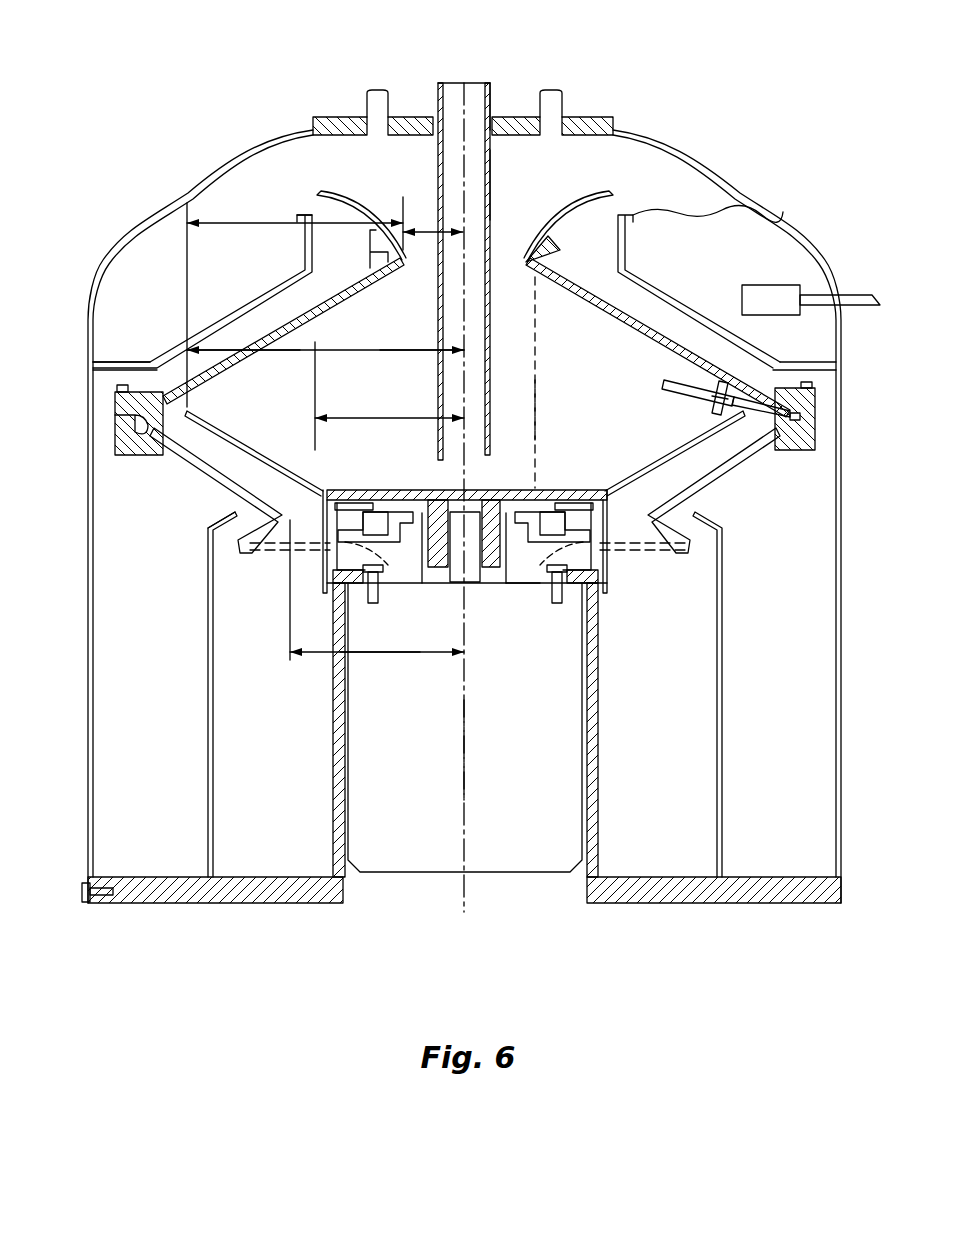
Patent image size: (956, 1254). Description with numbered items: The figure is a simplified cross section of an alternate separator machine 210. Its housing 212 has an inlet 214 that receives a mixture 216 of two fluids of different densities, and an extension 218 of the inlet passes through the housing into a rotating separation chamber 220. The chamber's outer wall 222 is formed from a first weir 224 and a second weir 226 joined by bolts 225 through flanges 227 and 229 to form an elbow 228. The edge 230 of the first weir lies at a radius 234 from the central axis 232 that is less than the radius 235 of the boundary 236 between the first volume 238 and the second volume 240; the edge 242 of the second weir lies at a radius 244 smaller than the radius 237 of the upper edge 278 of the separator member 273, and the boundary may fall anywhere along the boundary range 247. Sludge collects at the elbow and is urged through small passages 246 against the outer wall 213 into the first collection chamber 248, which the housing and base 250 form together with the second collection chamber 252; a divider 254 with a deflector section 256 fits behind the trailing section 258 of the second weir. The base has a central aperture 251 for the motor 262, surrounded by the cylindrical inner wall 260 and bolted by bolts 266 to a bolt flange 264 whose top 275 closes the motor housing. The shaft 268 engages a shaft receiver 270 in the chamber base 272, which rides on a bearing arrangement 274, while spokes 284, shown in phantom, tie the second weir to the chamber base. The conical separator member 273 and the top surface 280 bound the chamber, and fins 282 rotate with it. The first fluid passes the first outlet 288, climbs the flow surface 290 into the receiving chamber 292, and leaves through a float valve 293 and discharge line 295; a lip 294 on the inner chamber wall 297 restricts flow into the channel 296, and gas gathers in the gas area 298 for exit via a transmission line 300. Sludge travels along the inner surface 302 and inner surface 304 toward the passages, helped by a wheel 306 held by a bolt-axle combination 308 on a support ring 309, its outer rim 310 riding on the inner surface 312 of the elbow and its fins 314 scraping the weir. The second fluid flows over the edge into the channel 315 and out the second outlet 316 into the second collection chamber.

The separator machine 210 is at (278, 1035).
The housing 212 is at (745, 178).
The outer wall / bolt 213 is at (82, 903).
The inlet 214 is at (490, 92).
The mixture 216 is at (448, 83).
The extension 218 is at (492, 180).
The separation chamber 220 is at (281, 333).
The outer wall 222 is at (172, 355).
The first weir 224 is at (307, 270).
The bolts 225 is at (110, 362).
The second weir 226 is at (217, 488).
The flange 227 is at (817, 403).
The elbow 228 is at (115, 395).
The flange 229 is at (817, 440).
The edge 230 is at (378, 268).
The central axis 232 is at (470, 740).
The radius 234 is at (432, 230).
The radius 235 is at (393, 417).
The boundary 236 is at (333, 351).
The radius 237 is at (398, 349).
The first volume 238 is at (355, 445).
The second volume 240 is at (285, 378).
The edge 242 is at (258, 556).
The radius 244 is at (377, 657).
The passages 246 is at (403, 105).
The boundary range 247 is at (270, 221).
The first collection chamber 248 is at (145, 745).
The base 250 is at (250, 905).
The central aperture 251 is at (513, 890).
The second collection chamber 252 is at (270, 740).
The divider 254 is at (207, 672).
The deflector section 256 is at (215, 516).
The trailing section 258 is at (208, 560).
The inner wall 260 is at (332, 835).
The motor 262 is at (405, 815).
The bolt flange 264 is at (372, 603).
The bolts 266 is at (557, 604).
The shaft 268 is at (455, 583).
The shaft receiver 270 is at (515, 497).
The chamber base 272 is at (578, 495).
The separator member 273 is at (272, 462).
The bushing or bearing arrangement 274 is at (378, 522).
The top 275 is at (522, 585).
The upper edge 278 is at (190, 412).
The top surface 280 is at (497, 497).
The fins 282 is at (537, 388).
The spoke 284 is at (653, 590).
The first outlet 288 is at (514, 266).
The flow surface 290 is at (346, 197).
The first fluid receiving chamber 292 is at (426, 255).
The float valve 293 is at (775, 285).
The lip 294 is at (300, 213).
The discharge line 295 is at (862, 293).
The channel 296 is at (632, 300).
The inner chamber wall 297 is at (222, 352).
The gas area 298 is at (708, 195).
The transmission line 300 is at (562, 100).
The inner surface 302 is at (300, 313).
The inner surface 304 is at (222, 430).
The wheel 306 is at (664, 390).
The bolt-axle combination 308 is at (748, 383).
The support ring 309 is at (709, 403).
The outer rim 310 is at (772, 452).
The inner surface 312 is at (115, 442).
The fins 314 is at (716, 382).
The channel 315 is at (200, 466).
The second outlet 316 is at (680, 493).